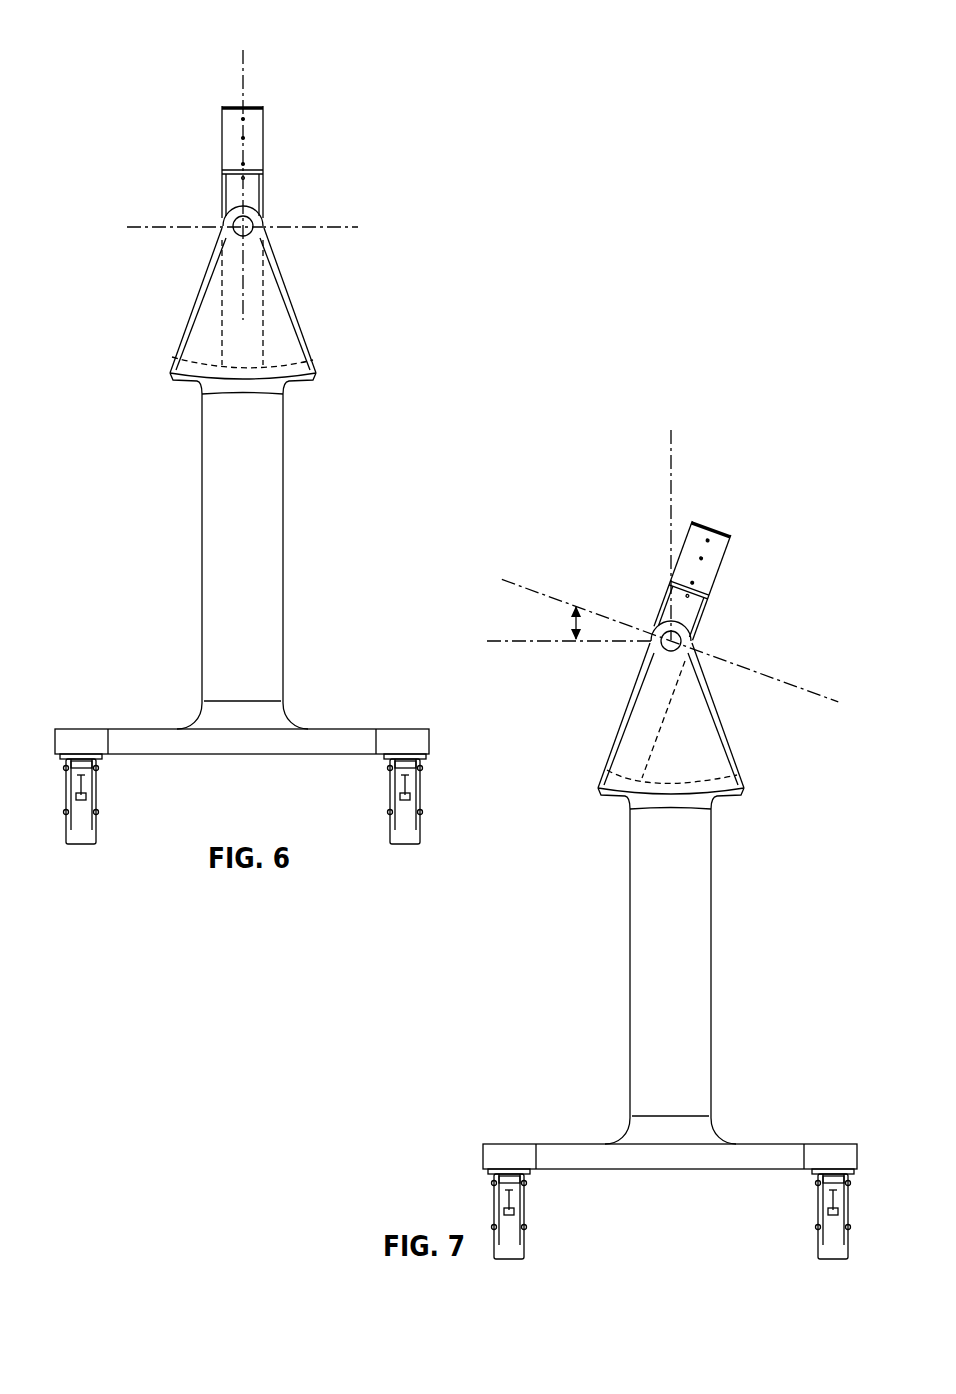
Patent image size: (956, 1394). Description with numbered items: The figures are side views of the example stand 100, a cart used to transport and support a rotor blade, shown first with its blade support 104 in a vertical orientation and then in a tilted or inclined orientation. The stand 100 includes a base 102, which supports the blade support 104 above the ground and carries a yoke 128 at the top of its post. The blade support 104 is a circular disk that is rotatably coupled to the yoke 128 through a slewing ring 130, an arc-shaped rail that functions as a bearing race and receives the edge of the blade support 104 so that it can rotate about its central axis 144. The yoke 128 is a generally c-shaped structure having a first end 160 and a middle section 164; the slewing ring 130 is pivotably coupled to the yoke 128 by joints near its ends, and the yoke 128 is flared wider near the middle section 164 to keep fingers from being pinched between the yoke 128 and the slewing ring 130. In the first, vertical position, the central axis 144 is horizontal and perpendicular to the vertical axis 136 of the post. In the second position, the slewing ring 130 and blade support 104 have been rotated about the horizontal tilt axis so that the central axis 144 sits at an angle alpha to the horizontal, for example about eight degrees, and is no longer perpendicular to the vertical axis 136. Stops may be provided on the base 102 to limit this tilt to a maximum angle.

In FIG. 6, the stand 100 is at (118, 64).
In FIG. 7, the stand 100 is at (546, 447).
In FIG. 6, the base 102 is at (158, 469).
In FIG. 7, the base 102 is at (603, 857).
In FIG. 6, the blade support 104 is at (252, 104).
In FIG. 7, the blade support 104 is at (728, 552).
In FIG. 6, the yoke 128 is at (205, 318).
In FIG. 7, the yoke 128 is at (717, 735).
In FIG. 6, the slewing ring 130 is at (232, 183).
In FIG. 7, the slewing ring 130 is at (693, 607).
In FIG. 6, the vertical axis 136 is at (243, 70).
In FIG. 7, the vertical axis 136 is at (672, 465).
In FIG. 6, the central axis 144 is at (158, 227).
In FIG. 7, the central axis 144 is at (798, 685).
In FIG. 6, the first end 160 is at (257, 221).
In FIG. 6, the middle section 164 is at (187, 373).
In FIG. 7, the middle section 164 is at (735, 778).